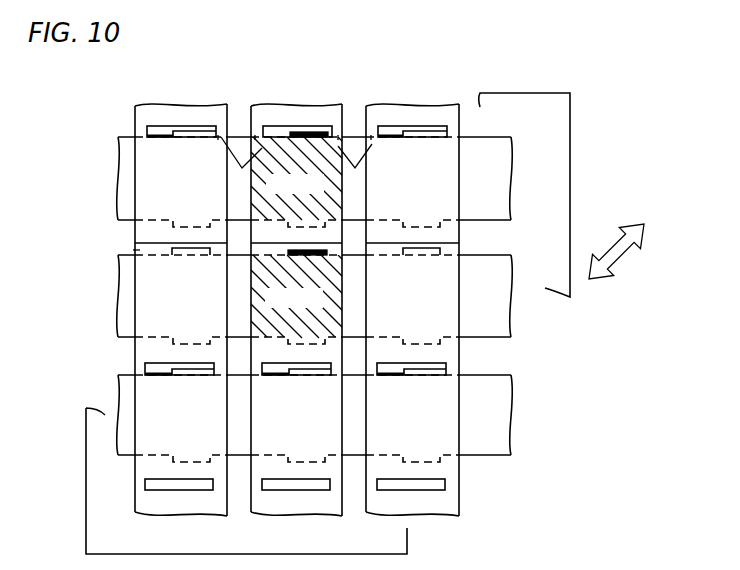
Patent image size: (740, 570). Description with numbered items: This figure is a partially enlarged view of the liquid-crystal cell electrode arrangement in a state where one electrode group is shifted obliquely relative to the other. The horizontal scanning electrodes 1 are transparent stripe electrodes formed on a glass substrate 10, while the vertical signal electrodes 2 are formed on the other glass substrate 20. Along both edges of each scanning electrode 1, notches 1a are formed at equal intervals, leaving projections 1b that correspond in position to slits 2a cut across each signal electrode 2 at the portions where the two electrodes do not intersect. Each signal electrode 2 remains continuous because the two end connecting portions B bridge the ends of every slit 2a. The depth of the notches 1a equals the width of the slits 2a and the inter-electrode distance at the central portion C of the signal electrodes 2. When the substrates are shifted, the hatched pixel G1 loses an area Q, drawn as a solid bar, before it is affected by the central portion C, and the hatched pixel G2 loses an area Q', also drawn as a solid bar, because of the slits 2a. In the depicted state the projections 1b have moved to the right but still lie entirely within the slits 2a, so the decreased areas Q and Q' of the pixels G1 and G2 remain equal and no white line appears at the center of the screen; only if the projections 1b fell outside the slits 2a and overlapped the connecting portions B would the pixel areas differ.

The scanning electrode 1 is at (495, 180).
The notch 1a is at (240, 136).
The projection 1b is at (420, 228).
The signal electrode 2 is at (212, 512).
The slit 2a is at (165, 130).
The glass substrate 10 is at (543, 104).
The glass substrate 20 is at (95, 530).
The connecting portion B is at (296, 167).
The central portion C is at (133, 250).
The decreased area Q is at (278, 241).
The decreased area Q' is at (313, 96).
The pixel G1 is at (294, 296).
The pixel G2 is at (294, 178).